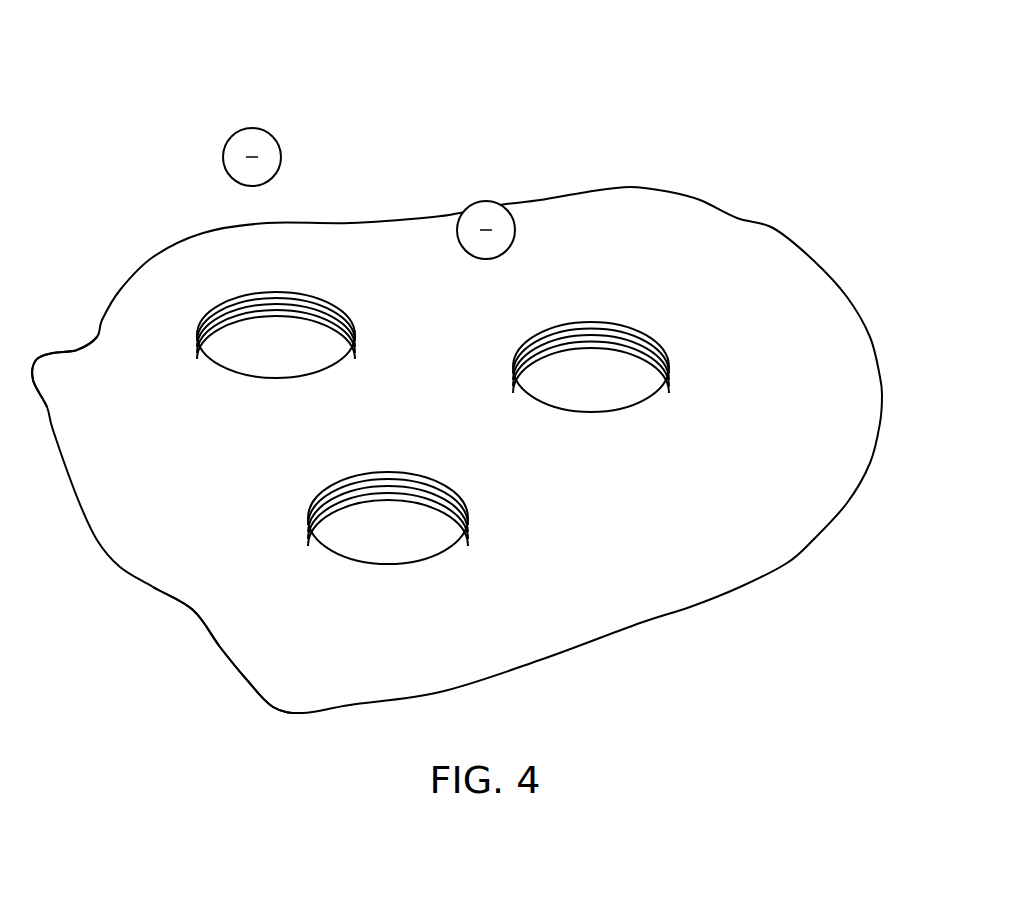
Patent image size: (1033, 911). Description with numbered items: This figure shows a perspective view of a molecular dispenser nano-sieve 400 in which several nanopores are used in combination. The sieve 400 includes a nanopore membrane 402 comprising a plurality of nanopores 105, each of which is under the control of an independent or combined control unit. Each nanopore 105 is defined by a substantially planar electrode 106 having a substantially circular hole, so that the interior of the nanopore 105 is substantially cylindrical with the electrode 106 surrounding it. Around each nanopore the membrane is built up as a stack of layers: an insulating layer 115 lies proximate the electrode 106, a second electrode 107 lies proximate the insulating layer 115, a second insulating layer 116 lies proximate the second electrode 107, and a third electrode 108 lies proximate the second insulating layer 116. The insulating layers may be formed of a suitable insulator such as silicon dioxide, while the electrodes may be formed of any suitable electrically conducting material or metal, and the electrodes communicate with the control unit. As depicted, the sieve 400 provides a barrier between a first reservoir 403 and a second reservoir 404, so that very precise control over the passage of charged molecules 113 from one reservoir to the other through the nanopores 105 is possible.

The sieve 400 is at (690, 84).
The nanopore membrane 402 is at (670, 192).
The reservoir 403 is at (63, 268).
The reservoir 404 is at (130, 663).
The nanopore 105 is at (436, 398).
The electrode 106 is at (245, 298).
The insulating layer 115 is at (280, 303).
The second electrode 107 is at (307, 308).
The second insulating layer 116 is at (337, 317).
The third electrode 108 is at (327, 323).
The charged molecules 113 is at (265, 129).